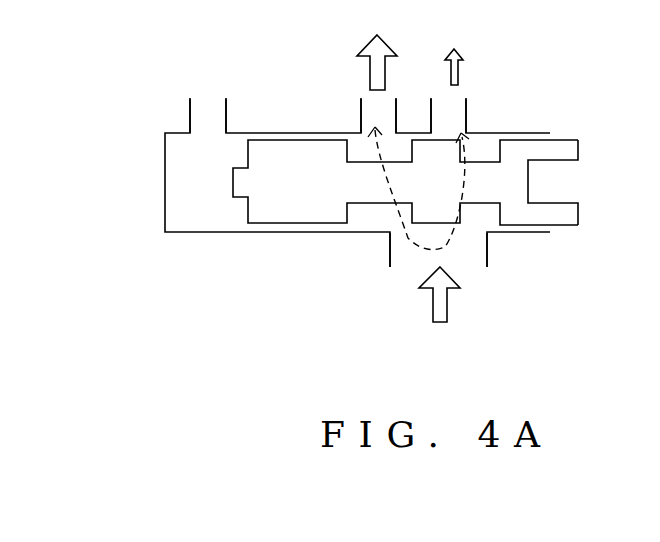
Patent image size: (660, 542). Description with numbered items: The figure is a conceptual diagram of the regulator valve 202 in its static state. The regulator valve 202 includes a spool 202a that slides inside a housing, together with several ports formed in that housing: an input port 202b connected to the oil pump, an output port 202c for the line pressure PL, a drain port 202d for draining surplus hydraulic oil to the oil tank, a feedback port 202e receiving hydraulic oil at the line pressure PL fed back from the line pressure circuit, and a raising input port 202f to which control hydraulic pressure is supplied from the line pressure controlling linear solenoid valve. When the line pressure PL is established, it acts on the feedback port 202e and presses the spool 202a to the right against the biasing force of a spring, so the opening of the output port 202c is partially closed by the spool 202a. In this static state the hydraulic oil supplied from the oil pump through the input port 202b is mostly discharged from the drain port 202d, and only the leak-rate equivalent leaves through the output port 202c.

The regulator valve 202 is at (126, 172).
The spool 202a is at (346, 193).
The input port 202b is at (487, 250).
The output port 202c is at (467, 115).
The drain port 202d is at (361, 120).
The feedback port 202e is at (189, 115).
The raising input port 202f is at (606, 167).